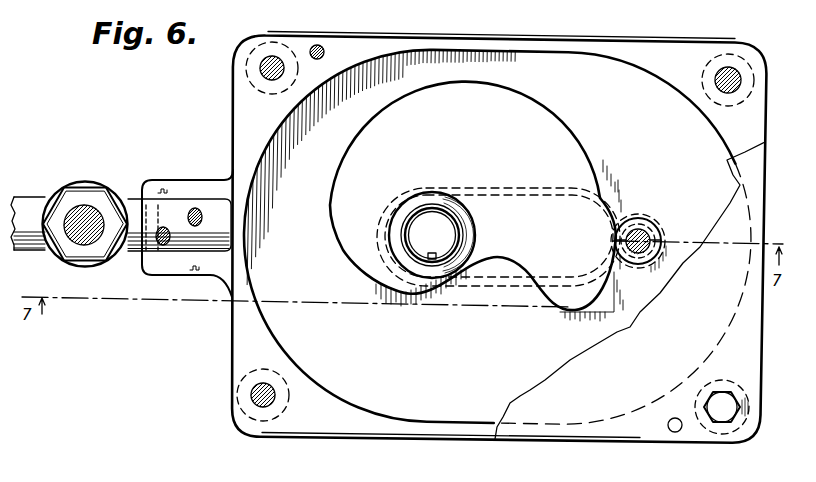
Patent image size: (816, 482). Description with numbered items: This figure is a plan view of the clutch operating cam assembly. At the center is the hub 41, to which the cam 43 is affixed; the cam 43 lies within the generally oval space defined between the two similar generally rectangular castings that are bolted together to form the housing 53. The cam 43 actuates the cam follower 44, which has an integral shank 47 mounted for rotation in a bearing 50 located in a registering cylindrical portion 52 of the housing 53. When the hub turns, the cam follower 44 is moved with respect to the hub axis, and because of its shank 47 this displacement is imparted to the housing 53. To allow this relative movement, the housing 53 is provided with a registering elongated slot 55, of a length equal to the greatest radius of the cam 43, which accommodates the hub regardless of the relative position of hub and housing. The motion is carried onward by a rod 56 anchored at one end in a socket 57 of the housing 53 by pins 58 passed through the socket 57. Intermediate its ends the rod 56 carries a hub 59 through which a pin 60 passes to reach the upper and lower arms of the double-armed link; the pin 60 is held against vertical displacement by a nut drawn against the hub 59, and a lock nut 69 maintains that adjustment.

The hub 41 is at (398, 205).
The cam 43 is at (533, 135).
The cam follower 44 is at (641, 226).
The shank 47 is at (642, 255).
The bearing 50 is at (641, 203).
The cylindrical portion 52 is at (665, 241).
The housing 53 is at (679, 52).
The elongated slot 55 is at (492, 272).
The rod 56 is at (42, 207).
The socket 57 is at (216, 181).
The pins 58 is at (163, 227).
The hub 59 is at (83, 185).
The pin 60 is at (95, 266).
The lock nut 69 is at (97, 190).